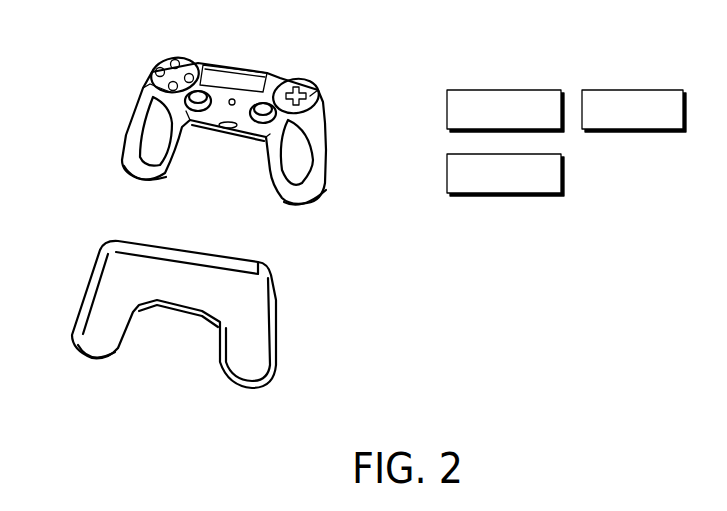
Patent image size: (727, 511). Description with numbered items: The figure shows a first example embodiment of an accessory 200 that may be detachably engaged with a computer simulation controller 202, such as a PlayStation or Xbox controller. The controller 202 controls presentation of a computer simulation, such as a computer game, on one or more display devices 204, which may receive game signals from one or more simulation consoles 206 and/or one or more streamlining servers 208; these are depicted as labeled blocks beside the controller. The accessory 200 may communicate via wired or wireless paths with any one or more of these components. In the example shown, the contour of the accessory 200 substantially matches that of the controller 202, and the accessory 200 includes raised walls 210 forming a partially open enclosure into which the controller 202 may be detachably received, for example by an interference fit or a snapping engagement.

The accessory 200 is at (187, 303).
The computer simulation controller 202 is at (238, 73).
The display device 204 is at (498, 90).
The simulation console 206 is at (447, 172).
The streamlining server 208 is at (633, 90).
The raised walls 210 is at (108, 258).